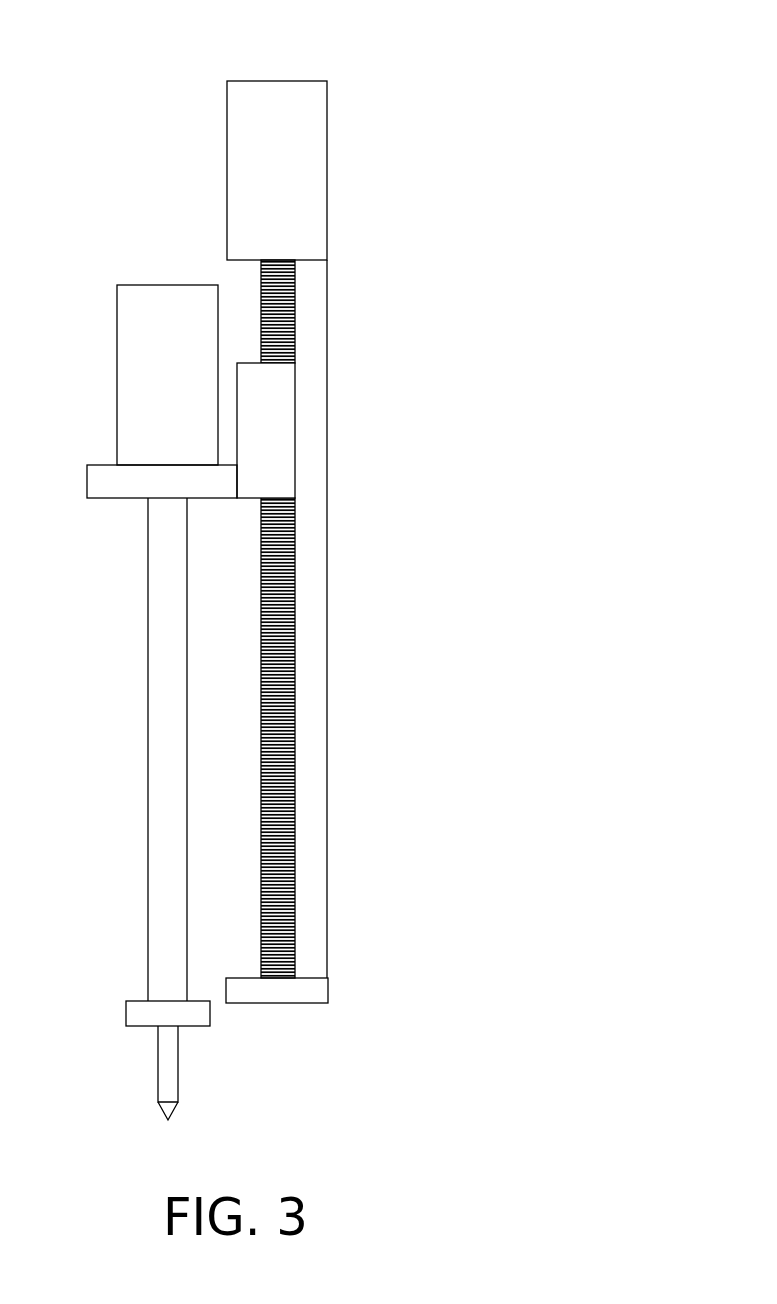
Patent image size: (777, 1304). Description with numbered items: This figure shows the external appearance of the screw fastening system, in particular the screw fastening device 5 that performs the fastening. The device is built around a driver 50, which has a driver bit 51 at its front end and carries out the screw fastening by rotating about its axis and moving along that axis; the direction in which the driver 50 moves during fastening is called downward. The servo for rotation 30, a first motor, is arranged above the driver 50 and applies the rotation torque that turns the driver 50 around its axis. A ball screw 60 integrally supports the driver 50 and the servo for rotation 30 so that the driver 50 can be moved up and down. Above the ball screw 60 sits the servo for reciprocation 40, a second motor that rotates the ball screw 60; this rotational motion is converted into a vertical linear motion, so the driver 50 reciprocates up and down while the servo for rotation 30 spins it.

The screw fastening device 5 is at (60, 82).
The servo for rotation 30 is at (127, 372).
The servo for reciprocation 40 is at (318, 151).
The driver 50 is at (157, 652).
The driver bit 51 is at (167, 1077).
The ball screw 60 is at (280, 612).